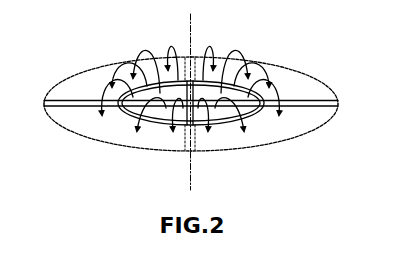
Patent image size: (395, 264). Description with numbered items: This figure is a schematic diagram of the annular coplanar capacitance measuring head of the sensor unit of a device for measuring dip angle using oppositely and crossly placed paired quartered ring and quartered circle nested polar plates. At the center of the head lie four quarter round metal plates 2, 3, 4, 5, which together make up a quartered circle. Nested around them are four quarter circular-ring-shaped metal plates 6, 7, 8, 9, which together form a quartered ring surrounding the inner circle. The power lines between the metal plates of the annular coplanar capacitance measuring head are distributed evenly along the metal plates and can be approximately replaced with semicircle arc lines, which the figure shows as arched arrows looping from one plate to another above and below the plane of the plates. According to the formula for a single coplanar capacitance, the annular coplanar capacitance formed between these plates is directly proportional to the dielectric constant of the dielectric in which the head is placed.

The quarter round metal plate 2 is at (248, 67).
The quarter round metal plate 3 is at (130, 67).
The quarter round metal plate 4 is at (140, 135).
The quarter round metal plate 5 is at (242, 136).
The quarter circular-ring-shaped metal plate 6 is at (266, 69).
The quarter circular-ring-shaped metal plate 7 is at (115, 74).
The quarter circular-ring-shaped metal plate 8 is at (117, 134).
The quarter circular-ring-shaped metal plate 9 is at (264, 134).